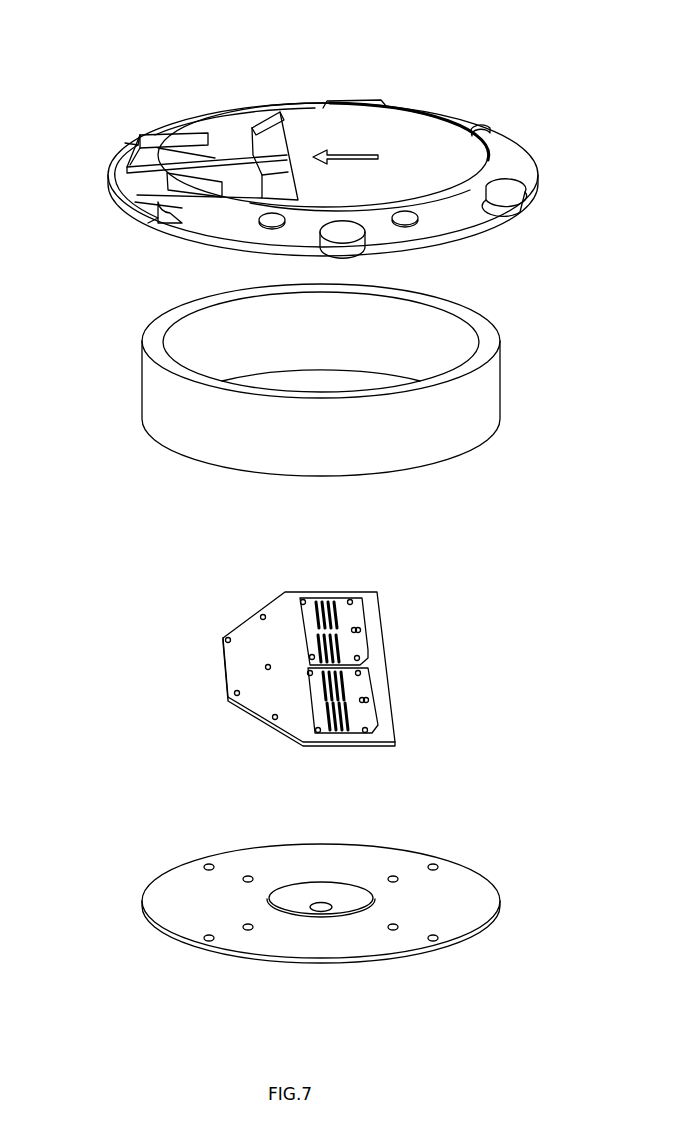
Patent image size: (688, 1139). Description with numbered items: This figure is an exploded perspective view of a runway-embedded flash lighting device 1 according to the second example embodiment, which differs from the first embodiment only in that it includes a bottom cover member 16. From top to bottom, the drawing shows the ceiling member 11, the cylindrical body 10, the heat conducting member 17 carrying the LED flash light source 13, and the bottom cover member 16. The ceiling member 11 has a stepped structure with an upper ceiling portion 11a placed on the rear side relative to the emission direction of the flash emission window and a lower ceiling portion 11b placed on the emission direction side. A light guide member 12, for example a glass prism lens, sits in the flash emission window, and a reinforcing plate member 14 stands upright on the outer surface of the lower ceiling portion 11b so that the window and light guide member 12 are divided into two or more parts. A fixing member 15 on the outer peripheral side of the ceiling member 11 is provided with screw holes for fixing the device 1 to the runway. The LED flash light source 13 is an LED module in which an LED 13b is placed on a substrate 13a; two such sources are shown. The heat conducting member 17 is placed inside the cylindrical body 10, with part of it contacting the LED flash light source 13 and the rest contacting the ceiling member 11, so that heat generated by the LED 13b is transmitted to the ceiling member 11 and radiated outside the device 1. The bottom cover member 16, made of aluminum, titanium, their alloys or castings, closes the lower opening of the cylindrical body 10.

The runway-embedded flash lighting device 1 is at (422, 26).
The cylindrical body 10 is at (488, 398).
The ceiling member 11 is at (517, 157).
The upper ceiling portion 11a is at (438, 118).
The lower ceiling portion 11b is at (225, 145).
The light guide member 12 is at (268, 140).
The LED flash light source 13 is at (368, 677).
The substrate 13a is at (337, 737).
The LED 13b is at (335, 602).
The reinforcing plate member 14 is at (120, 190).
The fixing member 15 is at (513, 192).
The bottom cover member 16 is at (485, 902).
The heat conducting member 17 is at (250, 638).